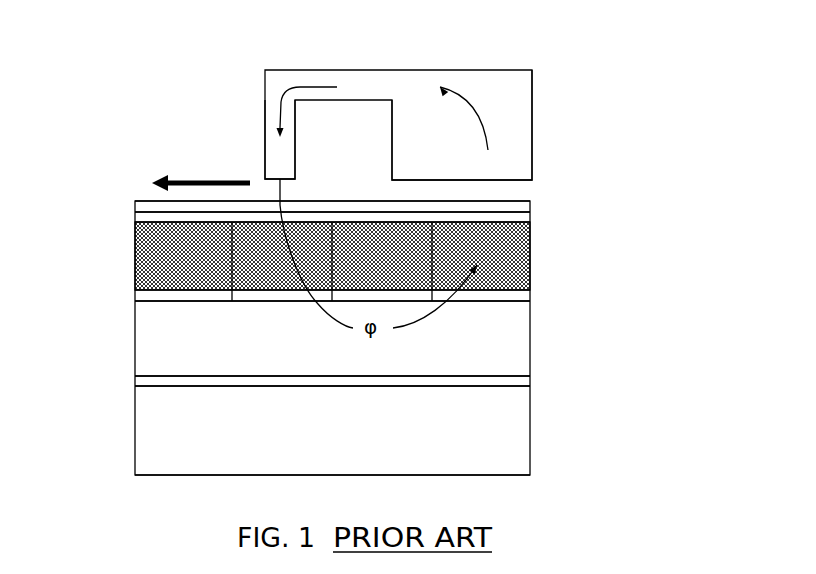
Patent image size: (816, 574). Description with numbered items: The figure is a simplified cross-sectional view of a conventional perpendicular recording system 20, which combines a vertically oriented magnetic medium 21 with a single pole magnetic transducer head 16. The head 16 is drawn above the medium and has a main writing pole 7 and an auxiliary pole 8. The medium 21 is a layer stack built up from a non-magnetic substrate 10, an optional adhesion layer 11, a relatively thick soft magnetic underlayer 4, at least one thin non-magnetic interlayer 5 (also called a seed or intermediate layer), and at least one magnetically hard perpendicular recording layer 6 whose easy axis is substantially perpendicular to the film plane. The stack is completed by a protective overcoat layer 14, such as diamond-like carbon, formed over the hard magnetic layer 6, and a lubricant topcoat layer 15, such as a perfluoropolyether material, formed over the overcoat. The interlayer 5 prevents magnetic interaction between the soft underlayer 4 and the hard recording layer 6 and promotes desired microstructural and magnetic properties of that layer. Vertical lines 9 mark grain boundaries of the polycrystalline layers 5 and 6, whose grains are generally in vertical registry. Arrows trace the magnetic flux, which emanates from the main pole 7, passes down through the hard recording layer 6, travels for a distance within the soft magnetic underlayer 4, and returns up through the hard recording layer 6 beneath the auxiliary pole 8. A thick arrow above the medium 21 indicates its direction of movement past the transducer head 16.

The magnetic transducer head 16 is at (287, 66).
The perpendicular recording system 20 is at (547, 58).
The main pole 7 is at (253, 119).
The auxiliary pole 8 is at (544, 107).
The magnetic medium 21 is at (103, 240).
The lubricant topcoat layer 15 is at (522, 203).
The protective overcoat layer 14 is at (522, 215).
The magnetically hard perpendicular recording layer 6 is at (522, 256).
The grain boundaries 9 is at (322, 306).
The interlayer 5 is at (522, 296).
The soft magnetic underlayer 4 is at (522, 332).
The adhesion layer 11 is at (522, 382).
The non-magnetic substrate 10 is at (522, 465).